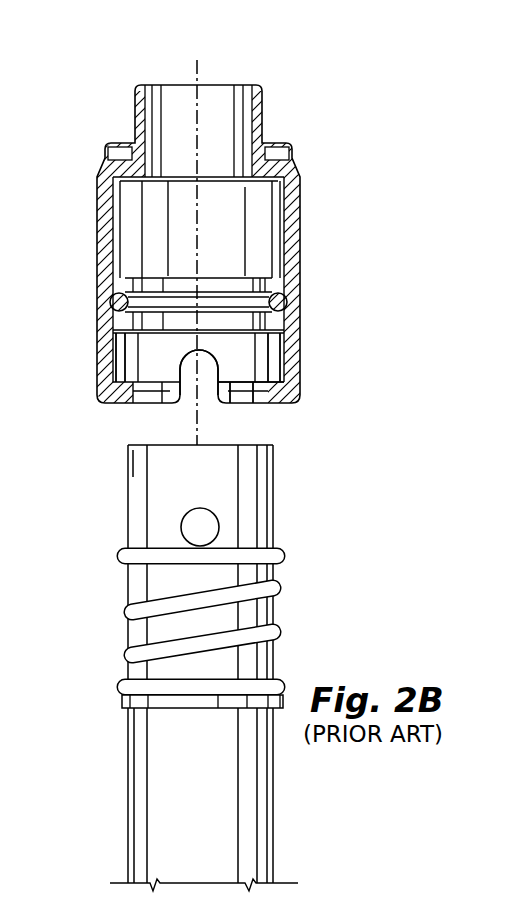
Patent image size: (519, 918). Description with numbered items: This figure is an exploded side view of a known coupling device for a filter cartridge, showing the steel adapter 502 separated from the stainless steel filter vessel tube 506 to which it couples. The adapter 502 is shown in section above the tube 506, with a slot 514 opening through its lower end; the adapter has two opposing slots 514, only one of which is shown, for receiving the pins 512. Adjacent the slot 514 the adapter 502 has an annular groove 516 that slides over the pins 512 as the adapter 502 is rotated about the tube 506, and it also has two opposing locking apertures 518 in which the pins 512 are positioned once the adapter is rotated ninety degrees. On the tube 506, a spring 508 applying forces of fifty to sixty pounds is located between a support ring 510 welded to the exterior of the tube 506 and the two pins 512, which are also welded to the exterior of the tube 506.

The steel adapter 502 is at (218, 97).
The filter vessel tube 506 is at (275, 807).
The spring 508 is at (127, 607).
The support ring 510 is at (122, 700).
The pins 512 is at (192, 520).
The slots 514 is at (190, 372).
The annular groove 516 is at (234, 369).
The locking apertures 518 is at (110, 352).